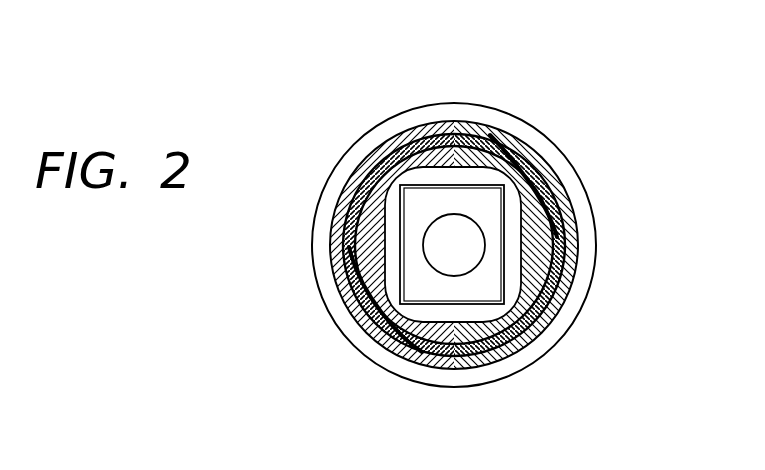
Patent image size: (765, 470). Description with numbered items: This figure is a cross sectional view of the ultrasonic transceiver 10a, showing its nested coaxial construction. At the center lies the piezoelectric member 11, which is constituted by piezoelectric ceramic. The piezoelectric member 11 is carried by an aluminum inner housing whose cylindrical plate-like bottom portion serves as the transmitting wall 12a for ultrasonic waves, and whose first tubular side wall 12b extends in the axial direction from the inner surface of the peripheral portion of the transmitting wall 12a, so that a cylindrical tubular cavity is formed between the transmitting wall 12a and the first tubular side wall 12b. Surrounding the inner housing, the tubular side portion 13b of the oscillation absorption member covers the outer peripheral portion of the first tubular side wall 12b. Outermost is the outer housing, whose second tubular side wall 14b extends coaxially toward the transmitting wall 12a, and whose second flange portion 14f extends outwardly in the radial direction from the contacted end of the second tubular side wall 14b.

The ultrasonic transceiver 10a is at (512, 84).
The piezoelectric member 11 is at (468, 231).
The transmitting wall 12a is at (451, 188).
The first tubular side wall 12b is at (347, 264).
The tubular side portion 13b is at (362, 164).
The second flange portion 14f is at (566, 173).
The second tubular side wall 14b is at (577, 236).